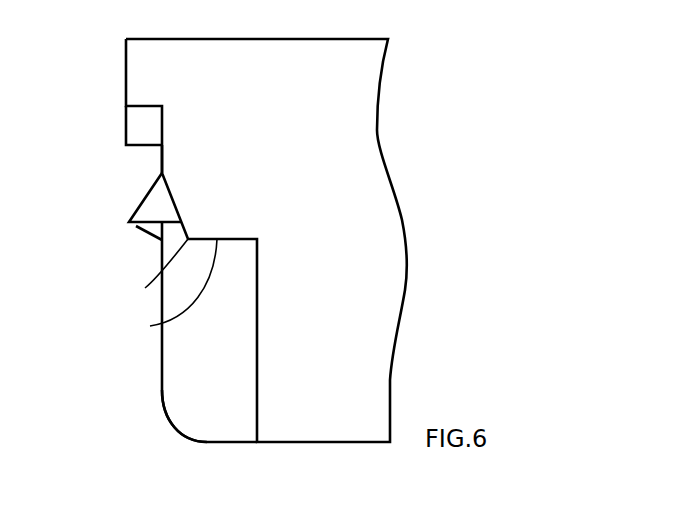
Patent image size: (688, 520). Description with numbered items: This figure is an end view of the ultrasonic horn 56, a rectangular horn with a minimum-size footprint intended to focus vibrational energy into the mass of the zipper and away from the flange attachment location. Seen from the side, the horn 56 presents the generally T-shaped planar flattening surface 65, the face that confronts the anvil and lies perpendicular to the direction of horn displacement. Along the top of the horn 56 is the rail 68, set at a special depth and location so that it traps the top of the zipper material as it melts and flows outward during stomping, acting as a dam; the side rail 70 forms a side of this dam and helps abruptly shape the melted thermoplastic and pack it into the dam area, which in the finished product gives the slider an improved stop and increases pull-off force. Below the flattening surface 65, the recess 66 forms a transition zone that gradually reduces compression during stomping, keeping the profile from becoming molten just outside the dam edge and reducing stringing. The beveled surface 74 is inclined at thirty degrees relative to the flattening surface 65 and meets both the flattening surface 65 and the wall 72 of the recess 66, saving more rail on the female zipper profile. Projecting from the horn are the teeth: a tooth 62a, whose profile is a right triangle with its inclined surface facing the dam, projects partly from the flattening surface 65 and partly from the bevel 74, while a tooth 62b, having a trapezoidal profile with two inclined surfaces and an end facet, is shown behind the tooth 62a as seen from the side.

The horn 56 is at (265, 39).
The rail 68 is at (128, 106).
The side rail 70 is at (138, 128).
The flattening surface 65 is at (162, 162).
The tooth 62a is at (150, 190).
The tooth 62b is at (150, 239).
The beveled surface 74 is at (147, 274).
The wall 72 is at (166, 291).
The recess 66 is at (200, 390).